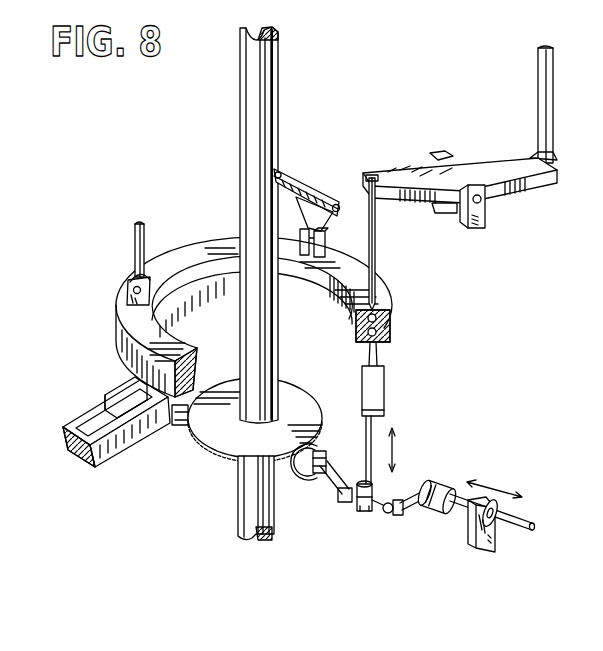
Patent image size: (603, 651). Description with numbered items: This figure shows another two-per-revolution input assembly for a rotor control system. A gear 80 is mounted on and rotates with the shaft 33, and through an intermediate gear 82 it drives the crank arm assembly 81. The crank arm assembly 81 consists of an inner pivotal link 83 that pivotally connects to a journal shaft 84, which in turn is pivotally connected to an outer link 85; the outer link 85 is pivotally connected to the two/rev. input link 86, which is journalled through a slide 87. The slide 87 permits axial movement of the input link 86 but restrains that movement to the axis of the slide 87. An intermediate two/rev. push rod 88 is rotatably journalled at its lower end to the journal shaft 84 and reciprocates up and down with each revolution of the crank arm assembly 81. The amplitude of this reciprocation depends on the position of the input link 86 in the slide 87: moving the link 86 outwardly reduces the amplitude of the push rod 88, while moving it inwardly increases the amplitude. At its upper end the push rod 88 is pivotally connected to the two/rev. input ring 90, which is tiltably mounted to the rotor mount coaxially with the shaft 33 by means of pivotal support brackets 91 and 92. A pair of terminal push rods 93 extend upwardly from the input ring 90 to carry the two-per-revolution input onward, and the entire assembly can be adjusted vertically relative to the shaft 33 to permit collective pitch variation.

The shaft 33 is at (263, 82).
The gear 80 is at (228, 441).
The crank arm assembly 81 is at (383, 518).
The intermediate gear 82 is at (313, 473).
The inner pivotal link 83 is at (340, 490).
The journal shaft 84 is at (368, 513).
The outer link 85 is at (408, 490).
The two/rev. input link 86 is at (456, 508).
The slide 87 is at (500, 504).
The intermediate two/rev. push rod 88 is at (380, 423).
The two/rev. input ring 90 is at (392, 330).
The pivotal support bracket 91 is at (320, 206).
The pivotal support bracket 92 is at (82, 418).
The terminal push rods 93 is at (374, 246).